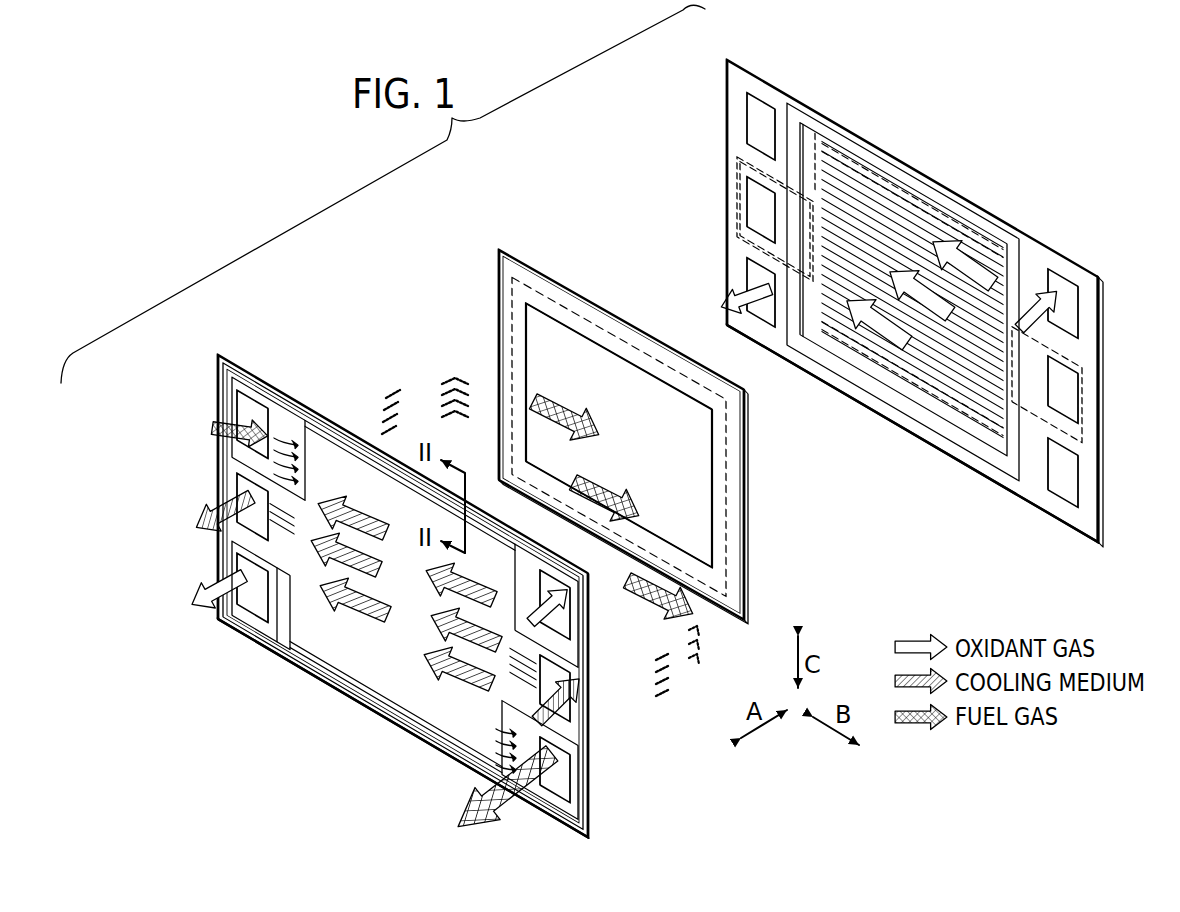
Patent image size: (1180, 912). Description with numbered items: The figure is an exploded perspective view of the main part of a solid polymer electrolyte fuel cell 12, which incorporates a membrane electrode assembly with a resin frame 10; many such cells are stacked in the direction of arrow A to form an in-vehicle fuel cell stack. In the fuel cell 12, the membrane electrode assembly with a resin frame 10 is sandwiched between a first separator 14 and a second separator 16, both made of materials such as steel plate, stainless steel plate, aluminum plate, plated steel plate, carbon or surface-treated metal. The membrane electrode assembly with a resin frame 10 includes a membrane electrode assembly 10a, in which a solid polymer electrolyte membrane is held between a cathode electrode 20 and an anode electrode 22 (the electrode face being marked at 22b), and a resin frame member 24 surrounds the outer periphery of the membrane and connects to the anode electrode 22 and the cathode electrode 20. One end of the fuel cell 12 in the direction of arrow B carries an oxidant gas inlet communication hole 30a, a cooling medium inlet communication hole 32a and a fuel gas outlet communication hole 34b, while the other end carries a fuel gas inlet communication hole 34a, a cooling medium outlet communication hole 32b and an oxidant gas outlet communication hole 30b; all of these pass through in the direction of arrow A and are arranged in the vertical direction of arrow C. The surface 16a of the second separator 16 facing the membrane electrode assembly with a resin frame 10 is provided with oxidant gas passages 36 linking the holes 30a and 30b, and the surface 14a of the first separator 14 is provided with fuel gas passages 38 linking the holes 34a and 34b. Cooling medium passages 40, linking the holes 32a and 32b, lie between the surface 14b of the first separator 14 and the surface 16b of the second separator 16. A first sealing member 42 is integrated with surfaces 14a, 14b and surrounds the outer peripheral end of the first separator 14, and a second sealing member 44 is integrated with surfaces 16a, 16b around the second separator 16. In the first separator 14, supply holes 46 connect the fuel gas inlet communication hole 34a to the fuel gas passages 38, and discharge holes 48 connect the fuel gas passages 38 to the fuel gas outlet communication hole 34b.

The membrane electrode assembly with a resin frame 10 is at (505, 246).
The membrane electrode assembly 10a is at (514, 316).
The solid polymer electrolyte fuel cell 12 is at (617, 131).
The first separator 14 is at (216, 352).
The surface of the first separator 14a is at (353, 698).
The surface of the first separator 14b is at (384, 706).
The second separator 16 is at (1085, 256).
The surface of the second separator 16a is at (1046, 500).
The surface of the second separator 16b is at (1082, 522).
The cathode electrode 20 is at (550, 296).
The anode electrode 22 is at (630, 382).
The electrode surface 22b is at (585, 350).
The resin frame member 24 is at (701, 357).
The oxidant gas inlet communication hole 30a is at (565, 612).
The oxidant gas outlet communication hole 30b is at (243, 567).
The cooling medium inlet communication hole 32a is at (565, 678).
The cooling medium outlet communication hole 32b is at (243, 486).
The fuel gas inlet communication hole 34a is at (243, 412).
The fuel gas outlet communication hole 34b is at (565, 765).
The oxidant gas passages 36 is at (848, 186).
The fuel gas passages 38 is at (386, 492).
The cooling medium passages 40 is at (330, 458).
The first sealing member 42 is at (308, 663).
The second sealing member 44 is at (1012, 240).
The supply holes 46 is at (296, 432).
The discharge holes 48 is at (490, 780).